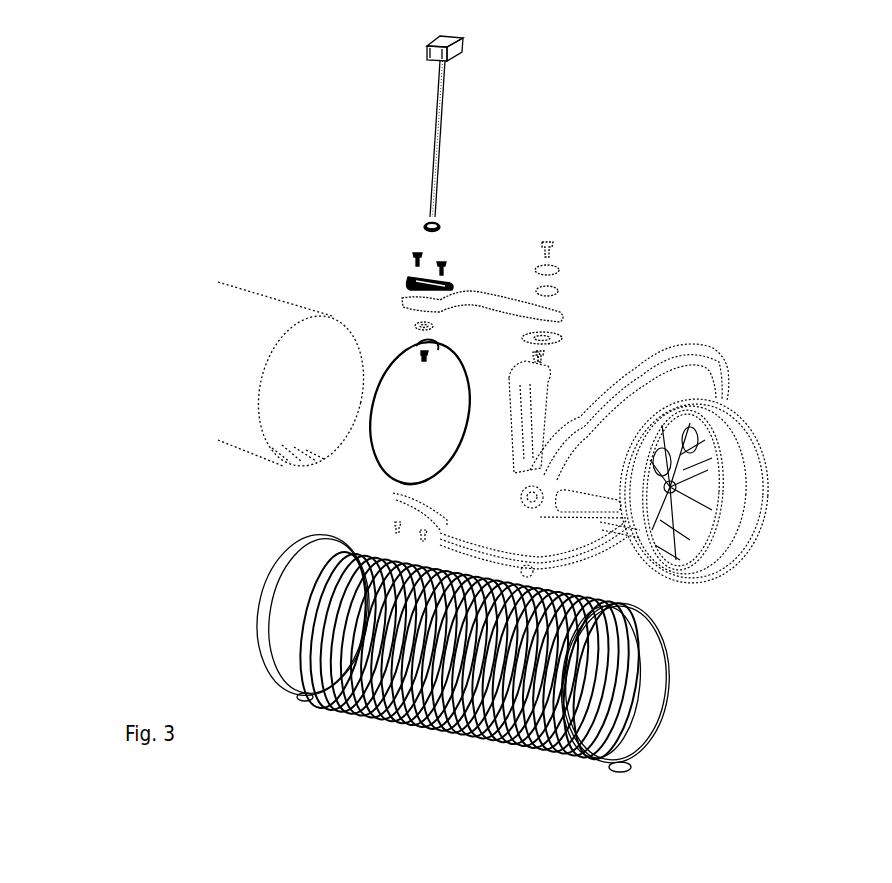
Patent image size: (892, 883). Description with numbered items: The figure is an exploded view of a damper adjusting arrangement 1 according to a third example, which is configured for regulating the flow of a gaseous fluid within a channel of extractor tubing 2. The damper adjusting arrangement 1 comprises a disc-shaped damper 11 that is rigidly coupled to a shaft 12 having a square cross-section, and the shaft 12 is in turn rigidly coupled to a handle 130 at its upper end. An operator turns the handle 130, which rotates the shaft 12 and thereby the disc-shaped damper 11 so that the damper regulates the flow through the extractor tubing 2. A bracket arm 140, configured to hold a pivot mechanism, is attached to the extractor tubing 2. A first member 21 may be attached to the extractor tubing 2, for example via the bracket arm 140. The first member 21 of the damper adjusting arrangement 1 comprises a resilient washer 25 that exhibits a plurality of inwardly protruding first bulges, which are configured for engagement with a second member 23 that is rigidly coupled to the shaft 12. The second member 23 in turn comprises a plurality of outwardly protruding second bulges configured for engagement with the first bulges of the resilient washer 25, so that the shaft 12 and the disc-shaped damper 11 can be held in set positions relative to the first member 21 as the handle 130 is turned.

The damper adjusting arrangement 1 is at (337, 155).
The extractor tubing 2 is at (255, 452).
The disc-shaped damper 11 is at (373, 463).
The shaft 12 is at (431, 186).
The first member 21 is at (388, 271).
The second member 23 is at (400, 227).
The resilient washer 25 is at (452, 280).
The handle 130 is at (462, 45).
The bracket arm 140 is at (503, 296).